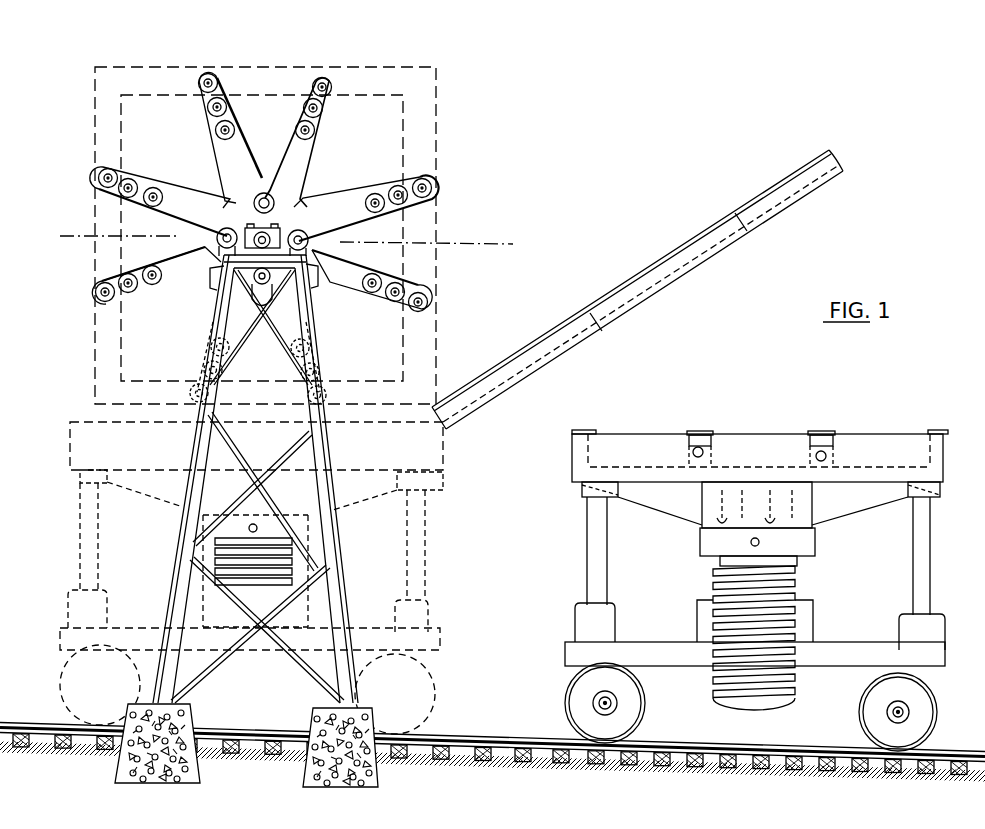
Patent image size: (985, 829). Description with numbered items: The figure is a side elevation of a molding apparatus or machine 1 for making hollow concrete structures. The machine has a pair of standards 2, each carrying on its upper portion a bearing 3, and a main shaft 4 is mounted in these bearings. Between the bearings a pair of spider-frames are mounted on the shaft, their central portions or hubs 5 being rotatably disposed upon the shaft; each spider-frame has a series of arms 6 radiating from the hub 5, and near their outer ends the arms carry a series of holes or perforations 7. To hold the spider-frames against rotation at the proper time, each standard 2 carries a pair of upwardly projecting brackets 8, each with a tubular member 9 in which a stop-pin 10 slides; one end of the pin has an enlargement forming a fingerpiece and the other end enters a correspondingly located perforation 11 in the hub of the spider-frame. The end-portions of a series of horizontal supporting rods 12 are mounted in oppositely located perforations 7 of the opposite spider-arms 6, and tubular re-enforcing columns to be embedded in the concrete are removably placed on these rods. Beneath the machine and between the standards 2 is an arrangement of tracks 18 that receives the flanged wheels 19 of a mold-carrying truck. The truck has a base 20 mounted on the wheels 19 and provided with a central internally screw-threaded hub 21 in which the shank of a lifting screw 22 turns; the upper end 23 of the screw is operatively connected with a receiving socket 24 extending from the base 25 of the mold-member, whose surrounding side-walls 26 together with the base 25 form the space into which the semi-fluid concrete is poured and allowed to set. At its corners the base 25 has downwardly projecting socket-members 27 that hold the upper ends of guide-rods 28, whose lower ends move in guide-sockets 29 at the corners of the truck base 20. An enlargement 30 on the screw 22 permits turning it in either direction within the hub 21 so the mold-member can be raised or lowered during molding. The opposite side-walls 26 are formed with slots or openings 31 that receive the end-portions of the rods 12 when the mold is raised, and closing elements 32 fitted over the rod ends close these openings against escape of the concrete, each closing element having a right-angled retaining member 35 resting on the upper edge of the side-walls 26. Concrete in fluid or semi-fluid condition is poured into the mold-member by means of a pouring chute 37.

The molding apparatus or machine 1 is at (279, 235).
The standards 2 is at (193, 450).
The bearing 3 is at (269, 232).
The main shaft 4 is at (257, 231).
The central portion or hub of spider-frame 5 is at (264, 193).
The arms 6 is at (222, 167).
The holes or perforations 7 is at (306, 118).
The brackets 8 is at (210, 278).
The tubular end-portion or member 9 is at (222, 231).
The stop-pin 10 is at (215, 250).
The perforation 11 is at (270, 198).
The horizontal supporting rods 12 is at (692, 452).
The tracks 18 is at (264, 733).
The flanged wheels 19 is at (62, 686).
The base 20 is at (833, 672).
The internally screw-threaded hub 21 is at (305, 607).
The lifting screw 22 is at (280, 573).
The upper end of lifting screw 23 is at (820, 523).
The receiving socket 24 is at (310, 510).
The base of mold-member 25 is at (153, 474).
The side-walls 26 is at (427, 455).
The socket-members 27 is at (82, 477).
The guide-rods 28 is at (86, 528).
The guide-sockets 29 is at (72, 603).
The enlargement 30 is at (280, 528).
The slots or openings 31 is at (708, 449).
The closing elements 32 is at (712, 436).
The right-angled retaining member 35 is at (593, 430).
The pouring chute 37 is at (665, 282).